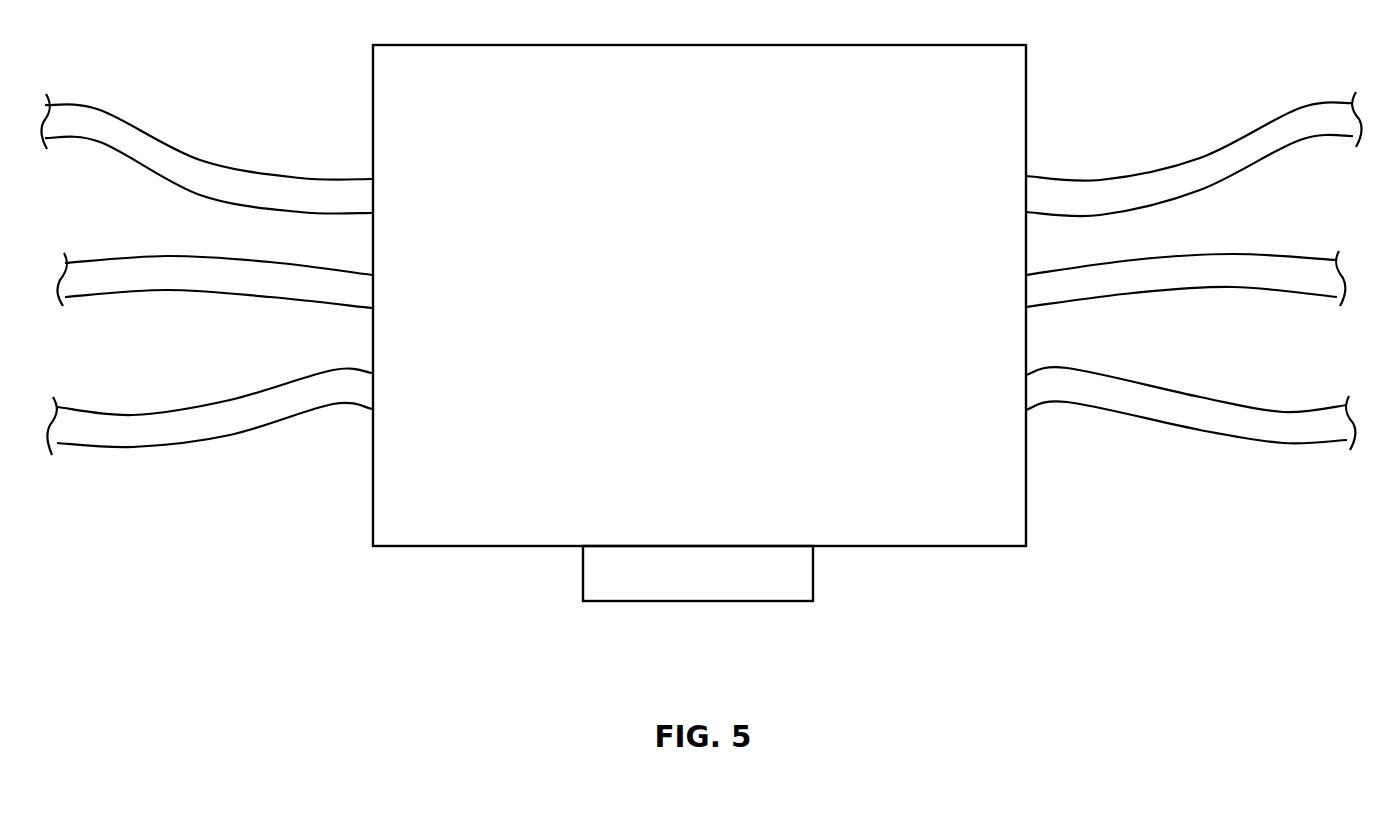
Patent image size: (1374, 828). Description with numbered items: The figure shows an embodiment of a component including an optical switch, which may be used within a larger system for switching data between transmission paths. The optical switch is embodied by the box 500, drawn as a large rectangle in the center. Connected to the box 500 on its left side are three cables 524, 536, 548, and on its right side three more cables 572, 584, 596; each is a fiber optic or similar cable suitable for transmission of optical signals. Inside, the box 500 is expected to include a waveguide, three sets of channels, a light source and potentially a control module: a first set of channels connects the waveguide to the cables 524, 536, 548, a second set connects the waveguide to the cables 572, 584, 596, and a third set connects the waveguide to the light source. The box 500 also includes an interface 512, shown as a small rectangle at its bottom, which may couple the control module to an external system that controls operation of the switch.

The box 500 is at (723, 309).
The interface 512 is at (723, 587).
The cable 548 is at (200, 175).
The cable 536 is at (215, 275).
The cable 524 is at (215, 422).
The cable 572 is at (1213, 173).
The cable 584 is at (1200, 273).
The cable 596 is at (1200, 422).